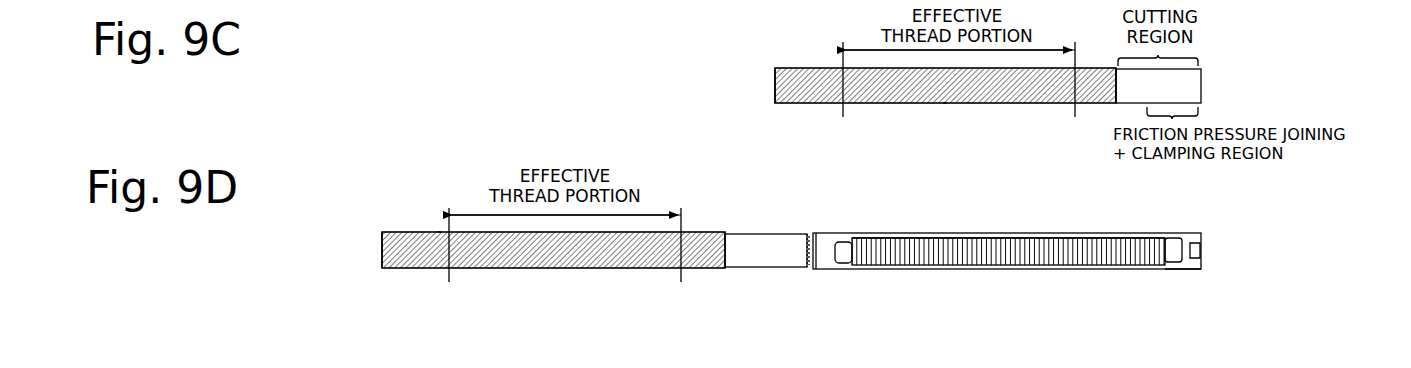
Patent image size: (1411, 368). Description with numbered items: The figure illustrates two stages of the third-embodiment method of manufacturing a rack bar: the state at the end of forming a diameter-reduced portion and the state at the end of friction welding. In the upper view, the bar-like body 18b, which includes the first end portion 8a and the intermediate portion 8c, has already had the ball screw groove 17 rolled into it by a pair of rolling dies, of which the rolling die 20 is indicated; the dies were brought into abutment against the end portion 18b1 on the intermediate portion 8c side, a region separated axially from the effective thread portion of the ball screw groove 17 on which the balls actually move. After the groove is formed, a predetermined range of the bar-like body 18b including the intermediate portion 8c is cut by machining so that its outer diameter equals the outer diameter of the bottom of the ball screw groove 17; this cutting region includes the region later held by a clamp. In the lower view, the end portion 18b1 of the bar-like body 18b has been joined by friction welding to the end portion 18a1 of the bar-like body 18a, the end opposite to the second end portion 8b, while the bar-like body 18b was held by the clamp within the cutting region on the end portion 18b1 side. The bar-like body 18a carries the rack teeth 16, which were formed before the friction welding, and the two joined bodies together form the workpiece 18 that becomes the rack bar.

In FIG. 9C, the first end portion 8a is at (775, 86).
In FIG. 9D, the first end portion 8a is at (382, 250).
In FIG. 9D, the second end portion 8b is at (1182, 270).
In FIG. 9C, the intermediate portion 8c is at (1093, 67).
In FIG. 9D, the intermediate portion 8c is at (757, 234).
In FIG. 9D, the rack teeth 16 is at (968, 243).
In FIG. 9C, the ball screw groove 17 is at (1002, 95).
In FIG. 9D, the ball screw groove 17 is at (552, 255).
In FIG. 9D, the workpiece 18 is at (1186, 226).
In FIG. 9D, the bar-like body 18a is at (1005, 232).
In FIG. 9D, the end portion 18a1 is at (807, 245).
In FIG. 9C, the bar-like body 18b is at (943, 105).
In FIG. 9D, the bar-like body 18b is at (437, 232).
In FIG. 9C, the end portion 18b1 is at (1201, 85).
In FIG. 9D, the end portion 18b1 is at (817, 240).
In FIG. 9C, the rolling die 20 is at (758, 1).